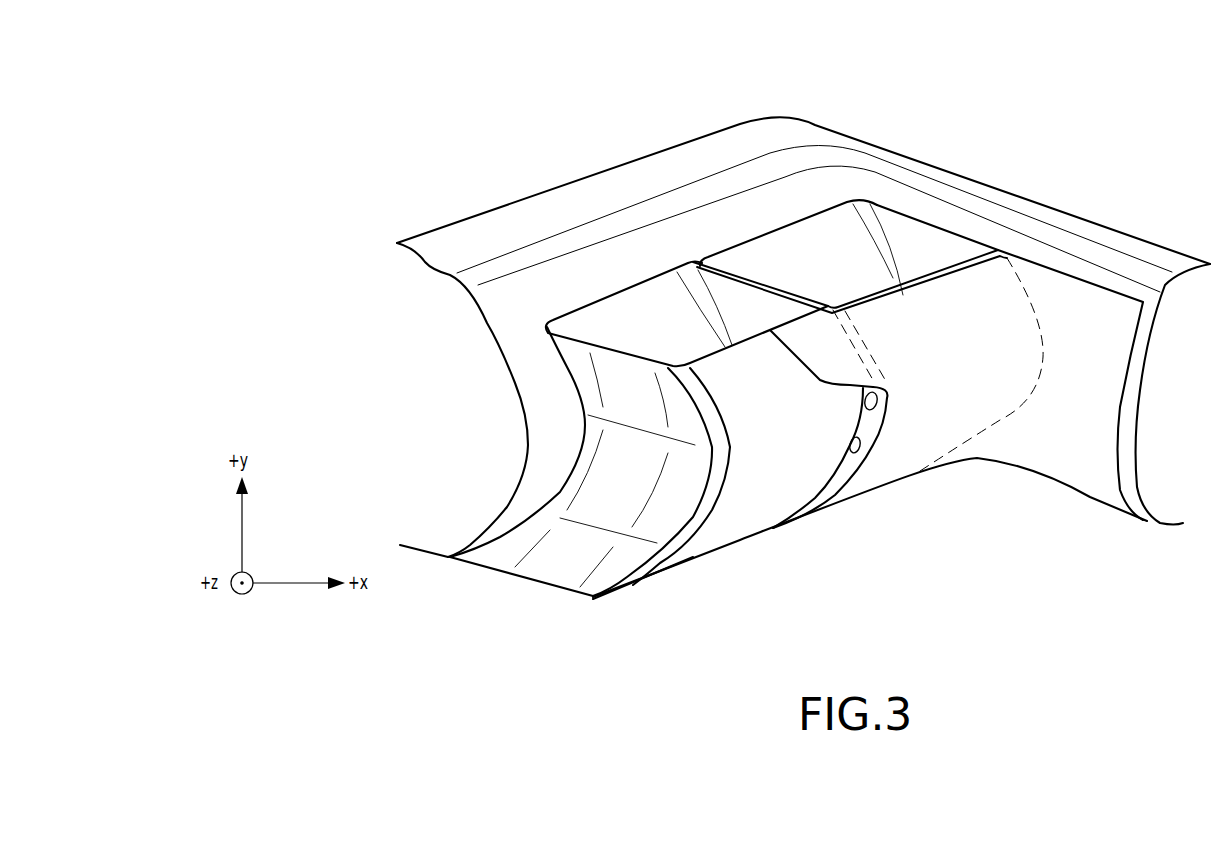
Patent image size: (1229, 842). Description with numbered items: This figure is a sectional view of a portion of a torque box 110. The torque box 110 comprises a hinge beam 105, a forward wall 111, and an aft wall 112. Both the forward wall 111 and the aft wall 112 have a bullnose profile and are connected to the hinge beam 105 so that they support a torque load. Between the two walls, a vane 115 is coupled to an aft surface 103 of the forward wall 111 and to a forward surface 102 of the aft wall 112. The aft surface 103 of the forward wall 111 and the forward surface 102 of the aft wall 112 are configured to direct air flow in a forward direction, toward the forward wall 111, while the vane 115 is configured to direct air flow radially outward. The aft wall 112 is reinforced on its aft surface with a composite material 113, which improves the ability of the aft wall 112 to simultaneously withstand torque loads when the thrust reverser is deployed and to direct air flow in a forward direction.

The torque box 110 is at (937, 93).
The forward wall 111 is at (815, 193).
The hinge beam 105 is at (1067, 230).
The aft surface 103 is at (670, 320).
The forward surface 102 is at (907, 290).
The vane 115 is at (757, 322).
The aft wall 112 is at (695, 550).
The composite material 113 is at (1057, 463).